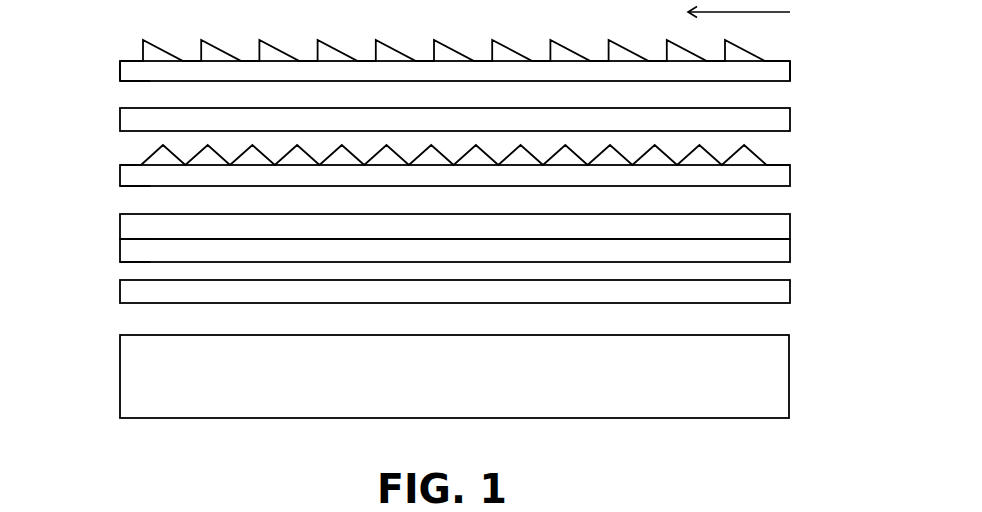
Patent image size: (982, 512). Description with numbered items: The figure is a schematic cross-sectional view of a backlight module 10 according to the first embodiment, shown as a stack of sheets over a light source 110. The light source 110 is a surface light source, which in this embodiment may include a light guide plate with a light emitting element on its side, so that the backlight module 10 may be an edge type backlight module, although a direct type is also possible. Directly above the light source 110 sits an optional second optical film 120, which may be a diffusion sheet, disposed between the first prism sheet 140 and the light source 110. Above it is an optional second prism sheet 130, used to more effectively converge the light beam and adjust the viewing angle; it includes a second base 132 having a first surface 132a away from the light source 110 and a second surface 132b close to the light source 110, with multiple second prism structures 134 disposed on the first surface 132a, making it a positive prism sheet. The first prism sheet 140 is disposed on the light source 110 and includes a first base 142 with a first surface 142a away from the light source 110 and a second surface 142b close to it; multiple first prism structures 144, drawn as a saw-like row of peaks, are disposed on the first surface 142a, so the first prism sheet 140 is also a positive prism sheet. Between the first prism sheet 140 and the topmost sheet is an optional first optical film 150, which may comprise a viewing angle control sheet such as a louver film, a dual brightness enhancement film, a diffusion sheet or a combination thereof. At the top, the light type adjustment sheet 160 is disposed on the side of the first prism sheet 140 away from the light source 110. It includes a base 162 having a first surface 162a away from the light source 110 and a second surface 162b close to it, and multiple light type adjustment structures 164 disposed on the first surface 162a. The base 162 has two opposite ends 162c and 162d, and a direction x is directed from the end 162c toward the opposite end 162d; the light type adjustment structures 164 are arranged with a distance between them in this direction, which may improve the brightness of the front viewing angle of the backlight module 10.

The backlight module 10 is at (463, 227).
The light source 110 is at (758, 375).
The second optical film 120 is at (757, 290).
The second prism sheet 130 is at (463, 242).
The second base 132 is at (757, 250).
The first surface of the second base 132a is at (134, 228).
The second surface of the second base 132b is at (134, 273).
The second prism structures 134 is at (757, 230).
The first prism sheet 140 is at (463, 168).
The first base 142 is at (757, 173).
The first surface of the first base 142a is at (134, 154).
The second surface of the first base 142b is at (134, 197).
The first prism structures 144 is at (748, 157).
The first optical film 150 is at (757, 123).
The light type adjustment sheet 160 is at (463, 68).
The base 162 is at (757, 67).
The first surface of the base 162a is at (134, 50).
The second surface of the base 162b is at (133, 83).
The end of the base 162c is at (791, 80).
The opposite end of the base 162d is at (120, 72).
The light type adjustment structures 164 is at (737, 53).